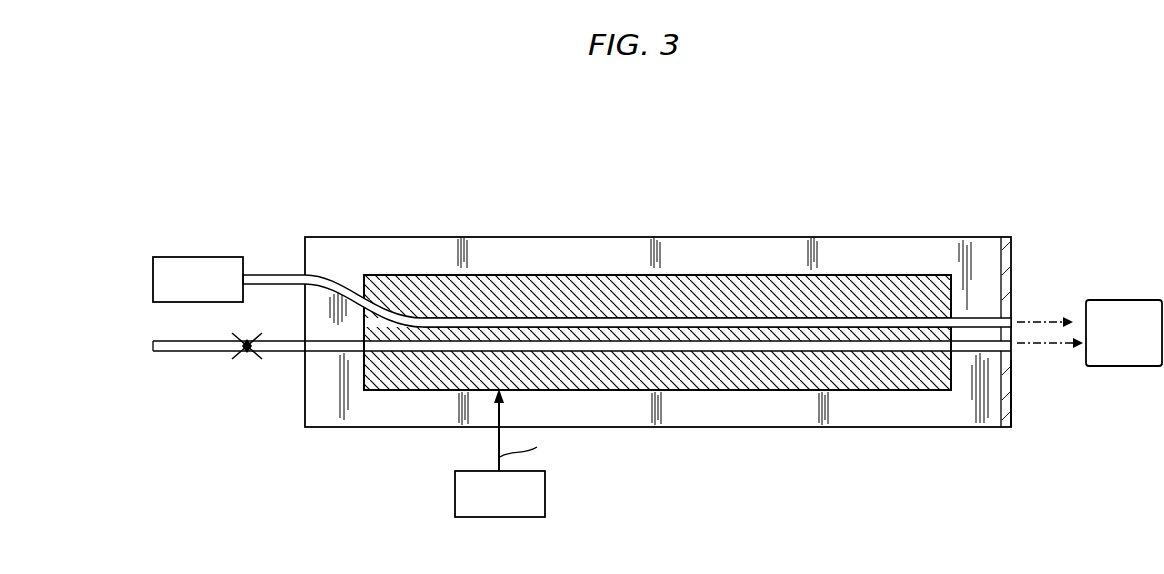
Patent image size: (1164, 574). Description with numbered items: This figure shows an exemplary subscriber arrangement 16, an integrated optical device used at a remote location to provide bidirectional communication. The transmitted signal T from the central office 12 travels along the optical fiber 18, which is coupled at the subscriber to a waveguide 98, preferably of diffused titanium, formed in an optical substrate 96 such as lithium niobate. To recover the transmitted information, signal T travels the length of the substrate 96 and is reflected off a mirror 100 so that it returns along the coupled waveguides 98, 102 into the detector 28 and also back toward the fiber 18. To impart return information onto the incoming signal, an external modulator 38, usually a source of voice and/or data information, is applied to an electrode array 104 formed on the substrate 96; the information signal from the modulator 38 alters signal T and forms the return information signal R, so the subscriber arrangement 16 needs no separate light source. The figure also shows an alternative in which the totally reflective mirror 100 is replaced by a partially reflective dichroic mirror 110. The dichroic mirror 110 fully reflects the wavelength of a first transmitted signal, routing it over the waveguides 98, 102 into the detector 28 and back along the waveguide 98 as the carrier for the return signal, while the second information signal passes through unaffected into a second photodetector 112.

The central office 12 is at (143, 390).
The subscriber arrangement 16 is at (642, 90).
The optical fiber 18 is at (173, 352).
The detector 28 is at (197, 257).
The external modulator 38 is at (545, 500).
The optical substrate 96 is at (339, 427).
The waveguide 98 is at (330, 352).
The mirror 100 is at (1013, 262).
The waveguide 102 is at (336, 270).
The electrode array 104 is at (522, 275).
The dichroic mirror 110 is at (1013, 412).
The second photodetector 112 is at (1130, 366).